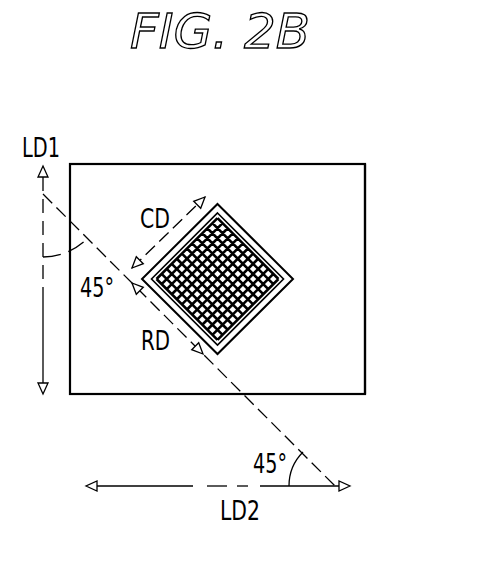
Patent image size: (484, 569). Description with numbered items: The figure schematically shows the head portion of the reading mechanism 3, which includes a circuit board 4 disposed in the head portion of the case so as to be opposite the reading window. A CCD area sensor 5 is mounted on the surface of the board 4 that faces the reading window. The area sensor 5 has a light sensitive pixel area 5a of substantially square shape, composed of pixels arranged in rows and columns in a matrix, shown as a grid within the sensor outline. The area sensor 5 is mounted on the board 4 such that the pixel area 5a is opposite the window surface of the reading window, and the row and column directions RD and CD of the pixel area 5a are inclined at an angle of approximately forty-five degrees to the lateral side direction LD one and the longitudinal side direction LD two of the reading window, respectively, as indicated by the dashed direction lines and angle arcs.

The reading mechanism 3 is at (310, 155).
The circuit board 4 is at (345, 292).
The CCD area sensor 5 is at (266, 241).
The light sensitive pixel area 5a is at (257, 290).